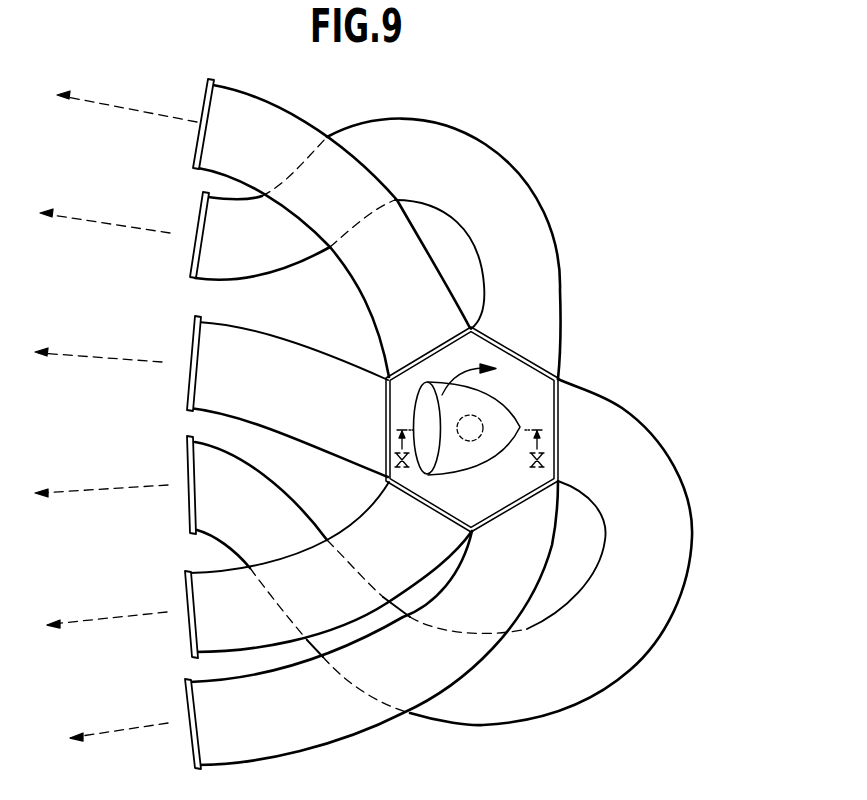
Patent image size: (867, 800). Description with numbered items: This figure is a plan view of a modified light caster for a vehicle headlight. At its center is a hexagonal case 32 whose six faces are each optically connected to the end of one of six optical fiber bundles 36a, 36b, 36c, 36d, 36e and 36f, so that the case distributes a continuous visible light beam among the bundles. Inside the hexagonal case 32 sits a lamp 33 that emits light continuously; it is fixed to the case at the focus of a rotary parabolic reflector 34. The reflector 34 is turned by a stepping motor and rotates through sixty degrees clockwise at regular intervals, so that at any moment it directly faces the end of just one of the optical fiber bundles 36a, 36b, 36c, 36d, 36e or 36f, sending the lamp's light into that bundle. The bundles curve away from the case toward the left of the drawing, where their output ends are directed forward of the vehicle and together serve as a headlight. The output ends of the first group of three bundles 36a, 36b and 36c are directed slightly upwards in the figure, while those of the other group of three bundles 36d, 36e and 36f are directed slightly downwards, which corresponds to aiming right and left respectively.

The hexagonal case 32 is at (527, 355).
The lamp 33 is at (472, 422).
The rotary parabolic reflector 34 is at (482, 455).
The optical fiber bundle 36a is at (212, 143).
The optical fiber bundle 36b is at (210, 252).
The optical fiber bundle 36c is at (203, 382).
The optical fiber bundle 36d is at (203, 507).
The optical fiber bundle 36e is at (205, 628).
The optical fiber bundle 36f is at (205, 740).